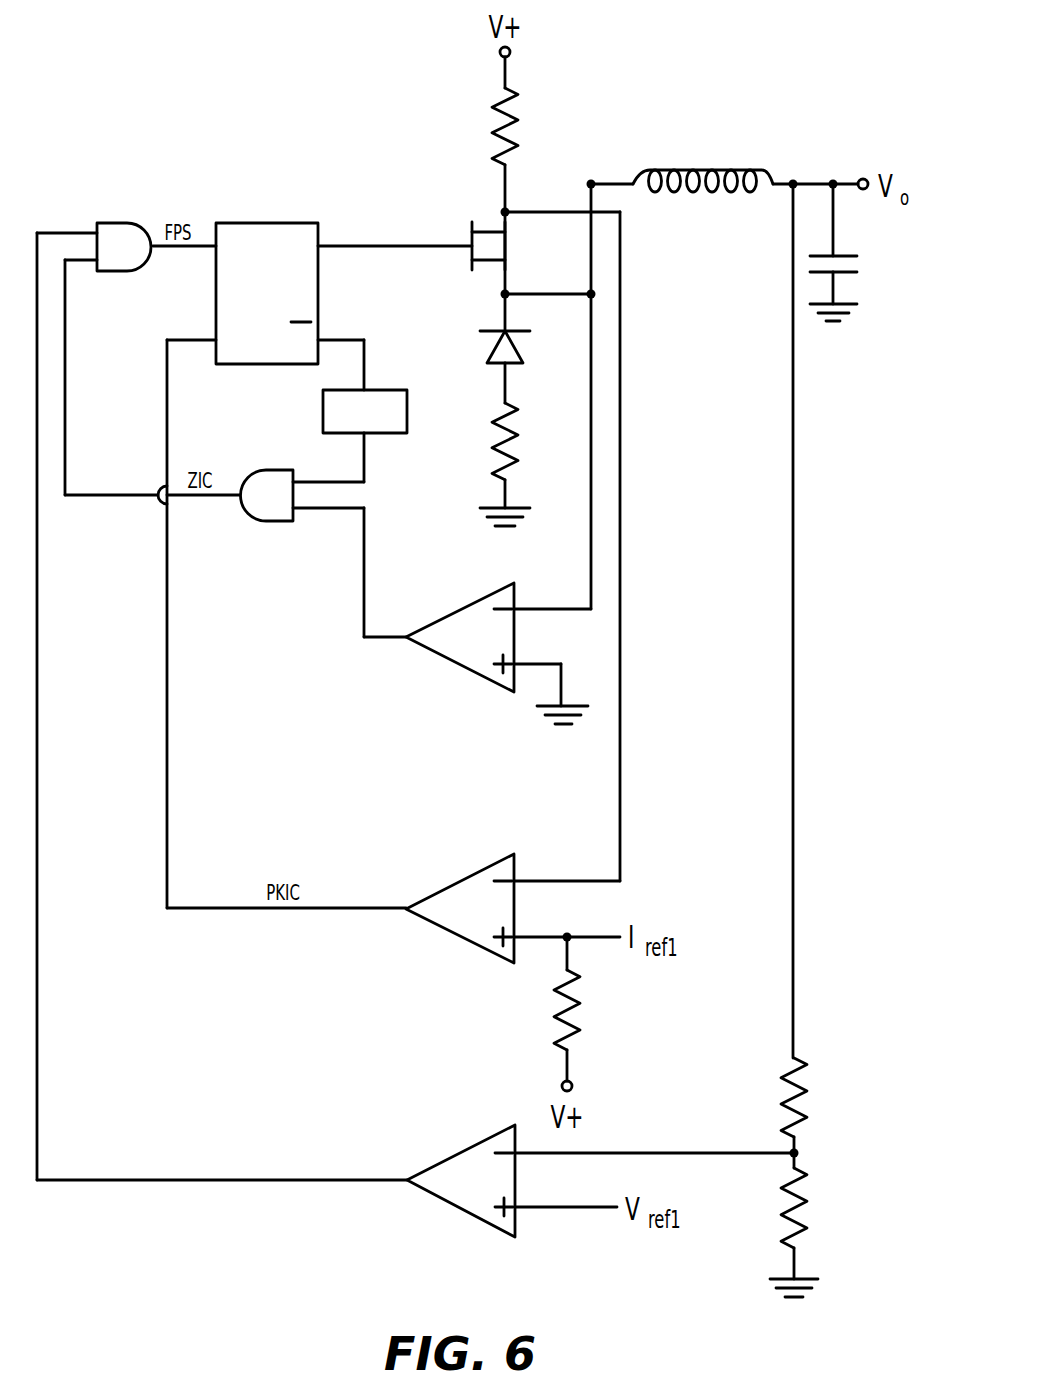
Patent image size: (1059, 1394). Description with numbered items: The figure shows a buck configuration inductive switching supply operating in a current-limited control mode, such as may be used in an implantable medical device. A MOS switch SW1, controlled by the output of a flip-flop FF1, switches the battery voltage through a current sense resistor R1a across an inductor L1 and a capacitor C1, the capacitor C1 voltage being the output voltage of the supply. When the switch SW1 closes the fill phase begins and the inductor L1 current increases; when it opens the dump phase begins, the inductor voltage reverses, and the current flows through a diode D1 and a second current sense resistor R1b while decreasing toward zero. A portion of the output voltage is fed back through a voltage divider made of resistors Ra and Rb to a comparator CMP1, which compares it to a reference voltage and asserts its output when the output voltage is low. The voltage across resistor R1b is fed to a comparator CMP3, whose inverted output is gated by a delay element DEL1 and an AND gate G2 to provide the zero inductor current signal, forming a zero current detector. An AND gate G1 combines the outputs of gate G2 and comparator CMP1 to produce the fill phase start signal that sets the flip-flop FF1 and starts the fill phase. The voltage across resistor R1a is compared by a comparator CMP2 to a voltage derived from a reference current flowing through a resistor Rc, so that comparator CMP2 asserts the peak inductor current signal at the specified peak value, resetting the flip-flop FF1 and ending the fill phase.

The current sense resistor R1a is at (479, 126).
The MOS switch SW1 is at (515, 246).
The inductor L1 is at (703, 161).
The capacitor C1 is at (854, 252).
The diode D1 is at (489, 348).
The current sense resistor R1b is at (486, 464).
The AND gate G1 is at (124, 247).
The flip-flop FF1 is at (267, 293).
The delay element DEL1 is at (365, 411).
The AND gate G2 is at (267, 495).
The comparator CMP3 is at (460, 637).
The comparator CMP2 is at (460, 908).
The comparator CMP1 is at (461, 1181).
The resistor Rc is at (588, 1010).
The resistor Ra is at (814, 1113).
The resistor Rb is at (815, 1208).